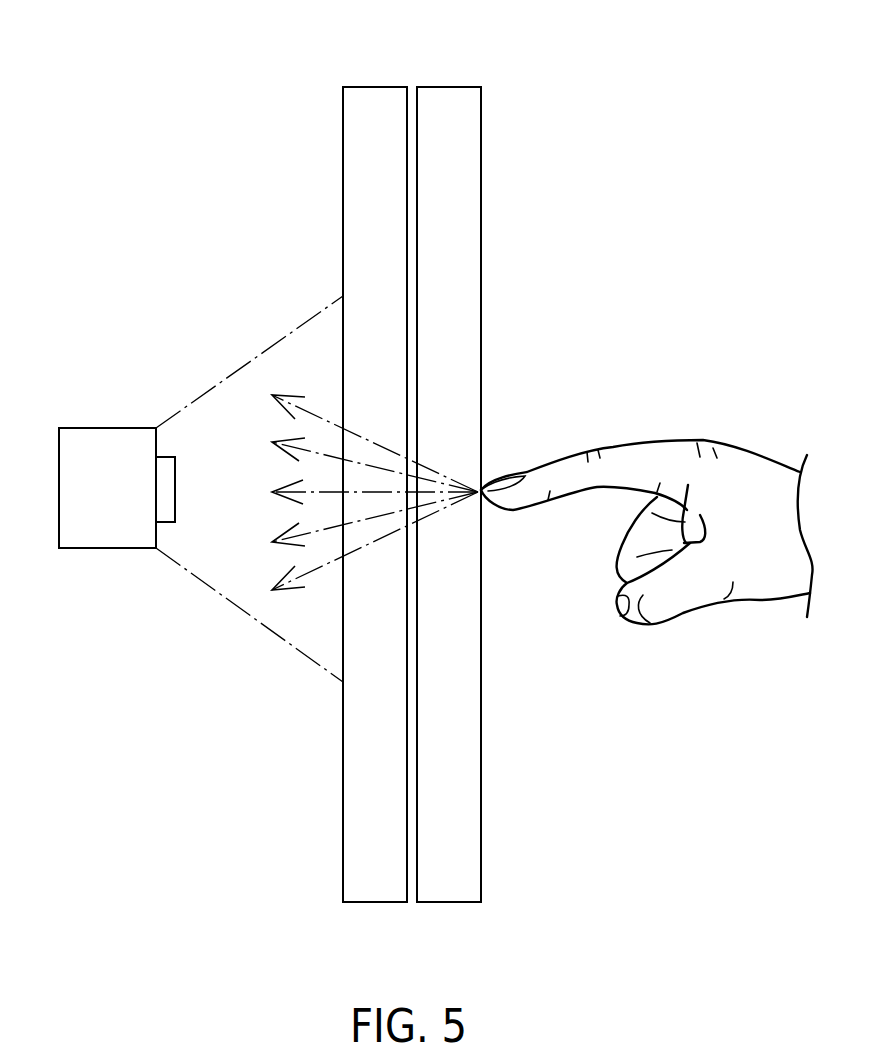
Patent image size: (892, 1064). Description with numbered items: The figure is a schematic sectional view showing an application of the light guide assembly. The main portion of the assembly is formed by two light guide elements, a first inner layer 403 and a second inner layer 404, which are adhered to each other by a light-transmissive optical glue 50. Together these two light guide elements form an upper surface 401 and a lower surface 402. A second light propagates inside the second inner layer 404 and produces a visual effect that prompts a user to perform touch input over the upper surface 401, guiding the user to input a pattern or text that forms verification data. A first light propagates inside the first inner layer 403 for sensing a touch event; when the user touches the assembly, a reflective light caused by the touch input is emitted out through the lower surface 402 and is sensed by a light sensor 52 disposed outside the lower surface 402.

The light-transmissive optical glue 50 is at (412, 495).
The upper surface 401 is at (481, 142).
The lower surface 402 is at (343, 142).
The first inner layer 403 is at (450, 105).
The second inner layer 404 is at (375, 105).
The light sensor 52 is at (105, 443).